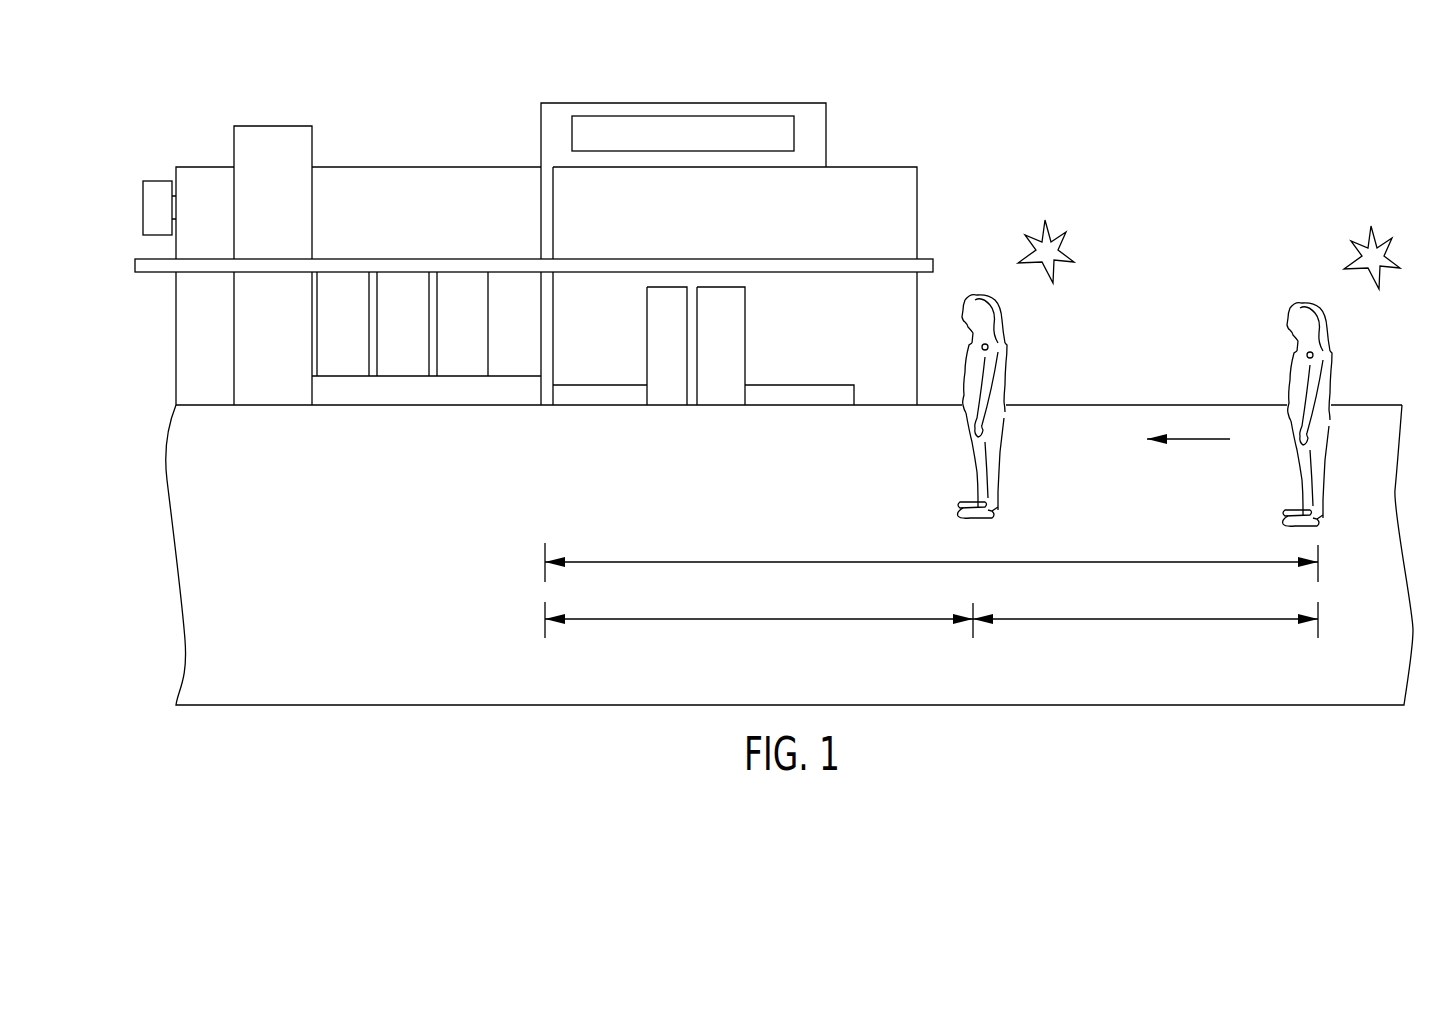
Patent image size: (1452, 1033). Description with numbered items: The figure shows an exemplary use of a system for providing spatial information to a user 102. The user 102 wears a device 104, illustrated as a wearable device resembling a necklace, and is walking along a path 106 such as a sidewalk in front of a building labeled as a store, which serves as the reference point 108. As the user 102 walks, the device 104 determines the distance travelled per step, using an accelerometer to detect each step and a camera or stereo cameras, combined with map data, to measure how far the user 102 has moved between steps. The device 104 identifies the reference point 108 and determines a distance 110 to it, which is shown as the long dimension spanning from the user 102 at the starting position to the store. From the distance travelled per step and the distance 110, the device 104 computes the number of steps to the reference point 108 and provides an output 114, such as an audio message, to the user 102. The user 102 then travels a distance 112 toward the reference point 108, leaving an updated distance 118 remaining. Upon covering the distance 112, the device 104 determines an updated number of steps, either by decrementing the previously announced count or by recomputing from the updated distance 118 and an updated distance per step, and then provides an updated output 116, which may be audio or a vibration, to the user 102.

The user 102 is at (977, 293).
The device 104 is at (985, 345).
The path 106 is at (1383, 458).
The reference point 108 is at (745, 117).
The distance 110 is at (845, 562).
The distance 112 is at (1152, 620).
The output 114 is at (1378, 240).
The updated output 116 is at (1052, 233).
The updated distance 118 is at (768, 620).